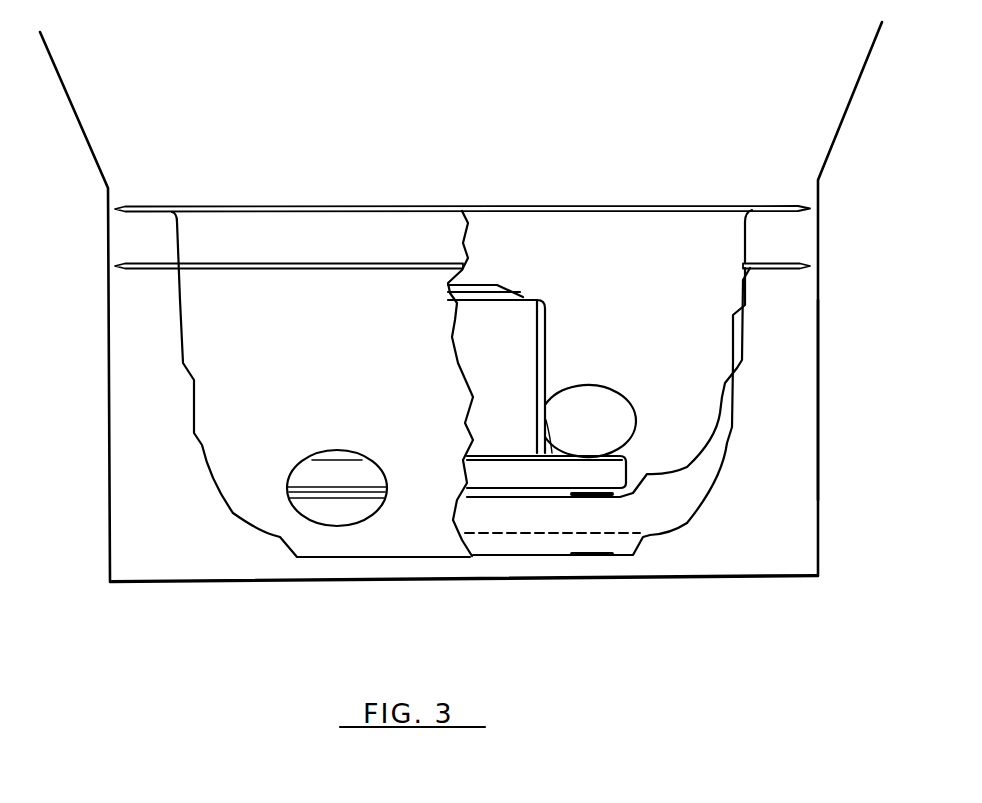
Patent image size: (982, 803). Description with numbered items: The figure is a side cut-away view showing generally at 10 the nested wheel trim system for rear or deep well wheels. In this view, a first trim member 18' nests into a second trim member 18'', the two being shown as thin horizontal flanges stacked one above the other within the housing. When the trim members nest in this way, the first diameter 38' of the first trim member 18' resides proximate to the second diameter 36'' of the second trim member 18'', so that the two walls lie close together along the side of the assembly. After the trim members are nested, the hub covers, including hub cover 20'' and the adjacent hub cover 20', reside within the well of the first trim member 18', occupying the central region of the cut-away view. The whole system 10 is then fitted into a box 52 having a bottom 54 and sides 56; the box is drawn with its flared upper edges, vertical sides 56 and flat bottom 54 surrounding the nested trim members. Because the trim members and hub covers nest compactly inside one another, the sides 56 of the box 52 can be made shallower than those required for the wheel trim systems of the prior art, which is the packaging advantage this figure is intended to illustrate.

The nested wheel trim system 10 is at (518, 142).
The first trim member 18' is at (462, 160).
The second trim member 18'' is at (467, 298).
The bracket 20' is at (518, 344).
The hub cover 20'' is at (551, 415).
The second diameter 36'' is at (644, 382).
The first diameter 38' is at (608, 382).
The box 52 is at (822, 510).
The bottom 54 is at (617, 578).
The sides 56 is at (820, 452).